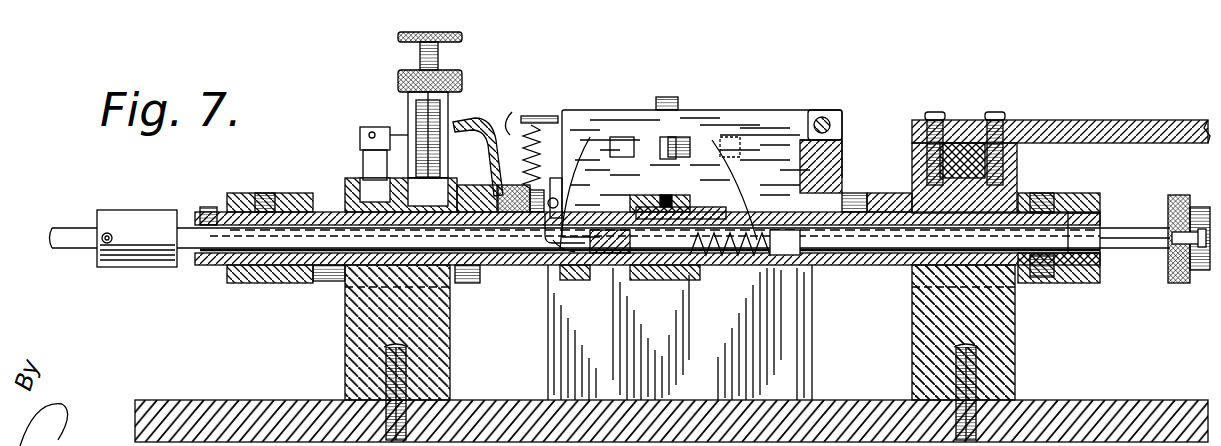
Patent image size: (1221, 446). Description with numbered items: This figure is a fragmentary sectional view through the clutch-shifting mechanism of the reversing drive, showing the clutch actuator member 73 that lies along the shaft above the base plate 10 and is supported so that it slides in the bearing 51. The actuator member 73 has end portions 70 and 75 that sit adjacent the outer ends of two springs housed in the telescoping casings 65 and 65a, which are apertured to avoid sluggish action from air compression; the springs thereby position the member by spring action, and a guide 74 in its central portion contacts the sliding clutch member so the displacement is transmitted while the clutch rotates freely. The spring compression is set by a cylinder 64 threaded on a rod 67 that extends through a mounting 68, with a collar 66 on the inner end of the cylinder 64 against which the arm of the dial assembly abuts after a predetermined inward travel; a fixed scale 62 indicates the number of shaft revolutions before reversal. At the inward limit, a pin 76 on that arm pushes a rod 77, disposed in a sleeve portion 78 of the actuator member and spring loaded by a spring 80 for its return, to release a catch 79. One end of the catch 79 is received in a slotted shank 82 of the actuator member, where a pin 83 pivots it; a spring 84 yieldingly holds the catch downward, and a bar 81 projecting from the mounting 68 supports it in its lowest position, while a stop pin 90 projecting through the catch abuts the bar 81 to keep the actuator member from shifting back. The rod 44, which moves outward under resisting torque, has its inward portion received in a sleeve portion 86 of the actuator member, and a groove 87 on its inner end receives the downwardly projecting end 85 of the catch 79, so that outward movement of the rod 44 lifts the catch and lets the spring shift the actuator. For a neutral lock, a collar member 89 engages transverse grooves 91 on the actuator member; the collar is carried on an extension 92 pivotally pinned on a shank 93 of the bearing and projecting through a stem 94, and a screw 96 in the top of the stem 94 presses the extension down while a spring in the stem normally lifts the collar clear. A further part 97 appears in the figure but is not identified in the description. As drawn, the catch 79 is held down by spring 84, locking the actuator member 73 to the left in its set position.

The base plate 10 is at (1118, 400).
The rod 44 is at (88, 228).
The bearing 51 is at (1000, 325).
The scale 62 is at (1097, 120).
The cylinder 64 is at (1200, 207).
The casing 65 is at (345, 184).
The casing 65a is at (862, 193).
The collar 66 is at (1172, 200).
The rod 67 is at (1135, 255).
The mounting 68 is at (795, 331).
The end portion 70 is at (235, 284).
The clutch actuator member 73 is at (560, 268).
The guide 74 is at (668, 281).
The end portion 75 is at (1090, 285).
The pin 76 is at (1175, 262).
The rod 77 is at (1080, 225).
The sleeve portion 78 is at (1042, 283).
The catch 79 is at (735, 112).
The spring 80 is at (736, 266).
The bar 81 is at (686, 138).
The slotted shank 82 is at (845, 150).
The pin 83 is at (822, 112).
The spring 84 is at (521, 118).
The downwardly projecting end 85 is at (640, 199).
The sleeve portion 86 is at (325, 282).
The groove 87 is at (578, 268).
The collar member 89 is at (496, 120).
The stop pin 90 is at (150, 212).
The transverse grooves 91 is at (470, 286).
The extension 92 is at (408, 112).
The shank 93 is at (360, 135).
The stem 94 is at (460, 92).
The screw 96 is at (398, 37).
The pedestal 97 is at (345, 320).